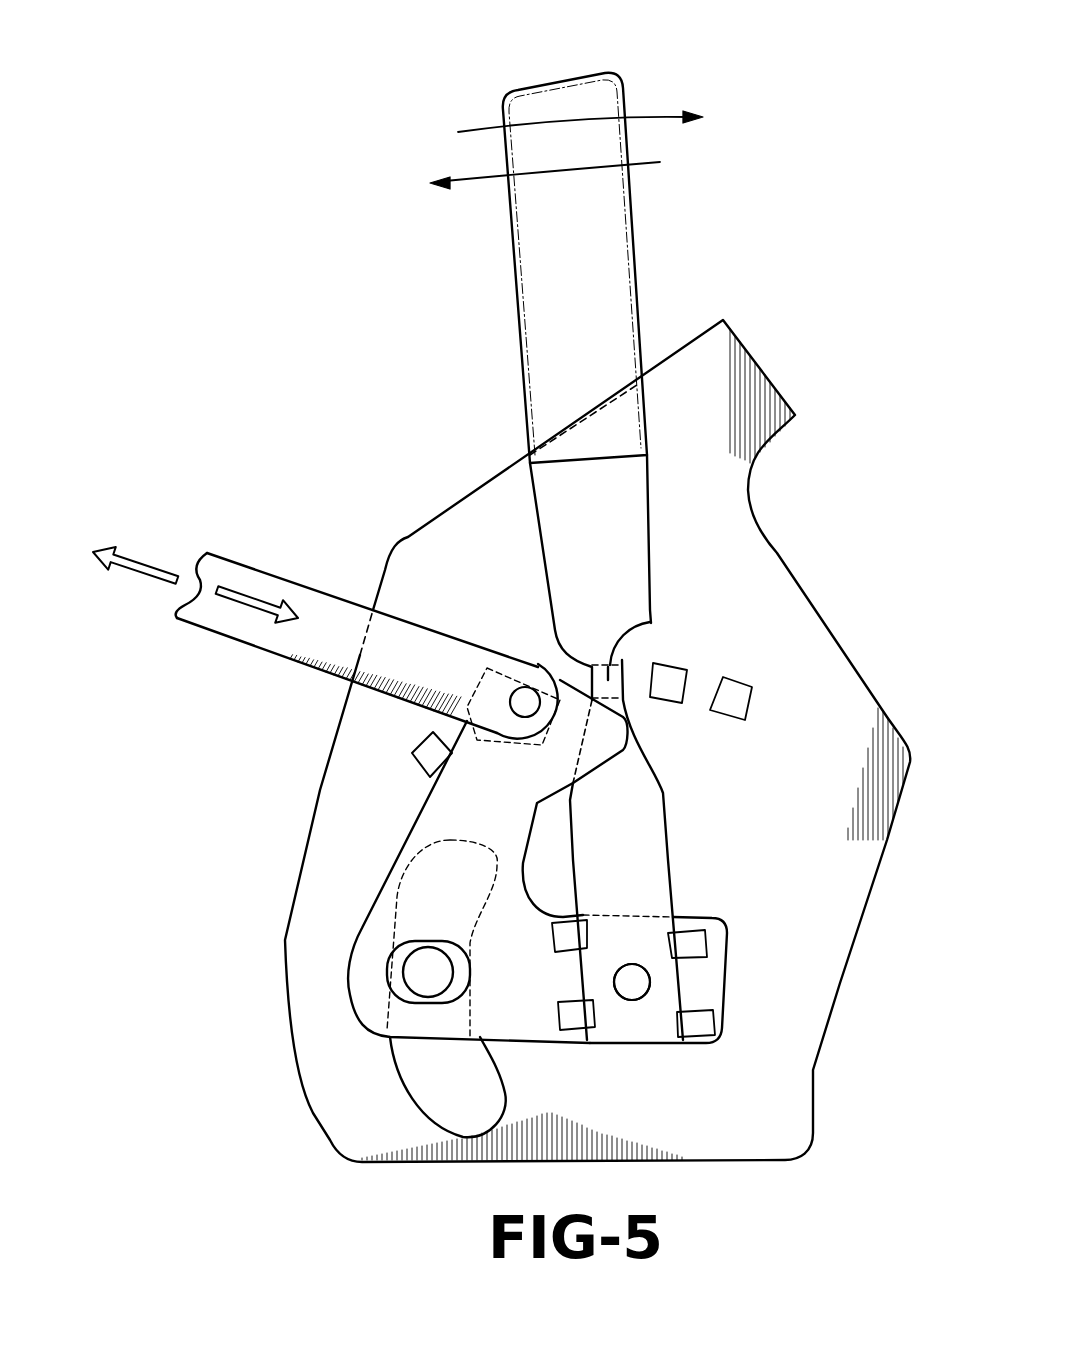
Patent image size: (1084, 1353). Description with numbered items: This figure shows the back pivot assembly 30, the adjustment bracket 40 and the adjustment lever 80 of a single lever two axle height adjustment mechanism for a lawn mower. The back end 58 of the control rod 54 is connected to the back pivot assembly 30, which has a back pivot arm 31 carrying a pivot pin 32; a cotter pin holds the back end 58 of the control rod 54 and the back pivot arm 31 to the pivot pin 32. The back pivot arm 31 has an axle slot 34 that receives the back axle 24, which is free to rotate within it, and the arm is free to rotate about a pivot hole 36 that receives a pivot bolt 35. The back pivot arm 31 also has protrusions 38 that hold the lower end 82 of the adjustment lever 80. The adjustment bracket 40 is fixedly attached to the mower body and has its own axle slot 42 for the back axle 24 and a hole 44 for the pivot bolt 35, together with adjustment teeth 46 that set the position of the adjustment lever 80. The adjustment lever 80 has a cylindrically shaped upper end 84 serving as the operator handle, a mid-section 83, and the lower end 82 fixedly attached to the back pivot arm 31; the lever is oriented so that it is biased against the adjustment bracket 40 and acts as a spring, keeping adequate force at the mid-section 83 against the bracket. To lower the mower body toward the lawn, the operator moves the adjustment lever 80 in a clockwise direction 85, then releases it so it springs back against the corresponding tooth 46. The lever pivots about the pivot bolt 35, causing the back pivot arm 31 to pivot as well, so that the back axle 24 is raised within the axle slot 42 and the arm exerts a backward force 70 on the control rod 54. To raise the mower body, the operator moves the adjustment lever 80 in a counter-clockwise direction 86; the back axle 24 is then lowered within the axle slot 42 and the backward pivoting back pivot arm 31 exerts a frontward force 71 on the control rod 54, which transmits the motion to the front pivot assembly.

The back axle 24 is at (437, 975).
The back pivot assembly 30 is at (792, 362).
The back pivot arm 31 is at (508, 808).
The pivot pin 32 is at (518, 698).
The axle slot 34 is at (397, 960).
The pivot bolt 35 is at (630, 990).
The pivot hole 36 is at (708, 926).
The hole 44 is at (640, 978).
The protrusions 38 is at (692, 948).
The adjustment bracket 40 is at (753, 567).
The axle slot 42 is at (470, 1112).
The adjustment teeth 46 is at (735, 690).
The control rod 54 is at (230, 572).
The back end 58 is at (428, 655).
The backward force 70 is at (243, 602).
The frontward force 71 is at (138, 573).
The adjustment lever 80 is at (615, 537).
The lower end 82 is at (655, 1013).
The mid-section 83 is at (650, 622).
The upper end 84 is at (519, 97).
The clockwise direction 85 is at (647, 118).
The counter-clockwise direction 86 is at (478, 176).